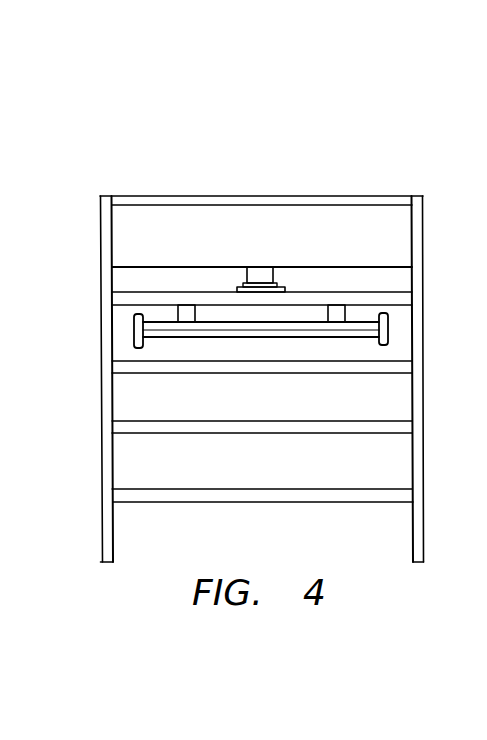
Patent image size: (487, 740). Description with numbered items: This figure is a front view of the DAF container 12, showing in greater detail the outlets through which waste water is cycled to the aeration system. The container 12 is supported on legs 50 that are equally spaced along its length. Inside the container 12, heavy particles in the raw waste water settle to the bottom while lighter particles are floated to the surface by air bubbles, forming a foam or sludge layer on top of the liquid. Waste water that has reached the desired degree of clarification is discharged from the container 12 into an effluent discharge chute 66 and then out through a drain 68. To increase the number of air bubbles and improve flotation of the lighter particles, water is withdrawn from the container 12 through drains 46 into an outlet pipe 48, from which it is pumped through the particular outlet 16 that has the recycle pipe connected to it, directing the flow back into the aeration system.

The DAF container 12 is at (191, 158).
The outlet 16 is at (302, 365).
The drains 46 is at (183, 321).
The outlet pipe 48 is at (252, 330).
The legs 50 is at (112, 527).
The effluent discharge chute 66 is at (307, 211).
The drain 68 is at (240, 287).